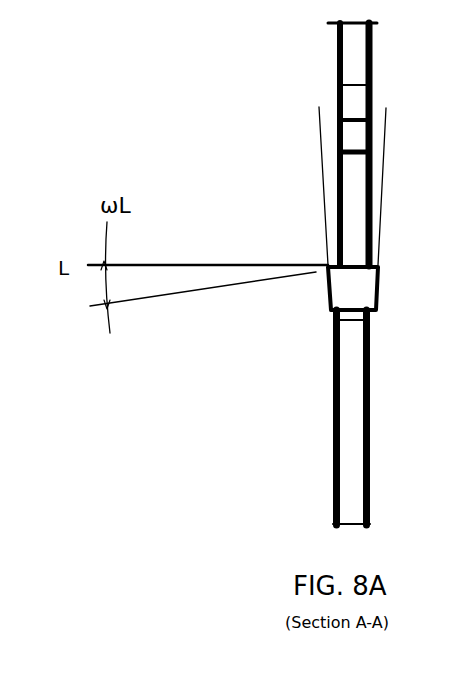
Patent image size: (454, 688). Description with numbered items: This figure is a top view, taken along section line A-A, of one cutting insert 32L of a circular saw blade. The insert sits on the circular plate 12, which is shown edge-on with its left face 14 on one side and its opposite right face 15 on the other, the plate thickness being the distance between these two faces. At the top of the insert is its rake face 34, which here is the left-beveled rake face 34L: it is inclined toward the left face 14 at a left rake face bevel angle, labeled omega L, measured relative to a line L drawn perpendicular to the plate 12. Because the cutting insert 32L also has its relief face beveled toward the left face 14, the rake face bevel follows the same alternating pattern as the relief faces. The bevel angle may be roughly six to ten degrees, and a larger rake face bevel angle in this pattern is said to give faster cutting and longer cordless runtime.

The circular plate 12 is at (342, 417).
The left face 14 is at (333, 432).
The right face 15 is at (362, 432).
The cutting insert 32L is at (345, 290).
The rake face 34 is at (375, 258).
The left-beveled rake face 34L is at (358, 262).